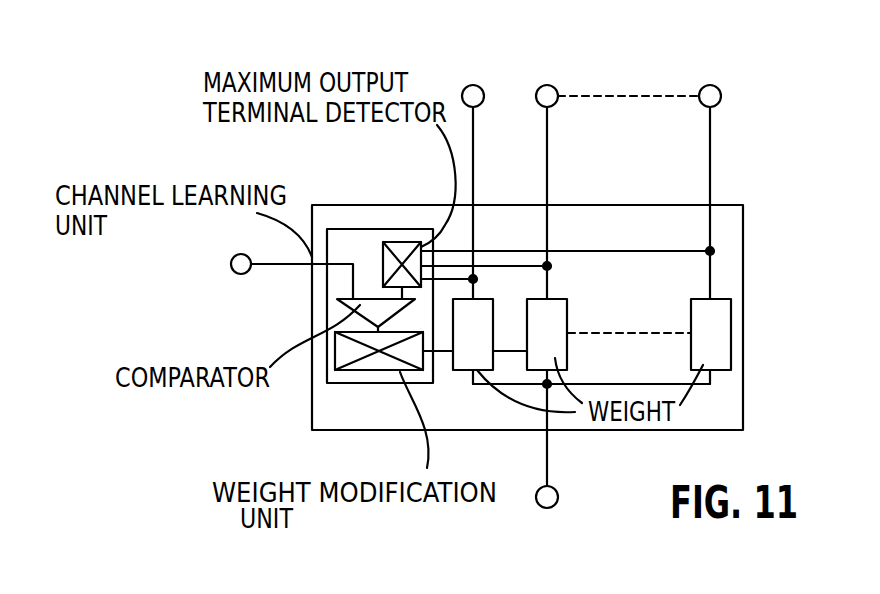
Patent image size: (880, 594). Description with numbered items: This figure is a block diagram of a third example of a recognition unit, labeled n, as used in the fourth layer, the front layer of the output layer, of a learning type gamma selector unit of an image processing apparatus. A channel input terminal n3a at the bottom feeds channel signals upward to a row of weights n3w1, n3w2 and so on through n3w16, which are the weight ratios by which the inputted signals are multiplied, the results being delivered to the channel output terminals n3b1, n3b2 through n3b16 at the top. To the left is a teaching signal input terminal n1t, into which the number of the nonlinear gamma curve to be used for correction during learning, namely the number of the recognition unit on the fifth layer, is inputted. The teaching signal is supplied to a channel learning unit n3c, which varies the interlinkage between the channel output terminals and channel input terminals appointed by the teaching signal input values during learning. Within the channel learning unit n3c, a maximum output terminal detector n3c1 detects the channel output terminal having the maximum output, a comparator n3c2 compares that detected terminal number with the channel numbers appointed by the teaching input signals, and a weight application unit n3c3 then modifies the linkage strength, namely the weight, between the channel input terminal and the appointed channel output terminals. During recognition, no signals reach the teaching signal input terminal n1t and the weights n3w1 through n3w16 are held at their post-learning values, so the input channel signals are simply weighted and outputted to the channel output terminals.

The neuron n is at (607, 205).
The channel learning unit n3c is at (327, 229).
The maximum output terminal detector n3c1 is at (413, 242).
The comparator n3c2 is at (375, 297).
The weight application unit n3c3 is at (373, 372).
The teaching signal input terminal n1t is at (235, 274).
The channel output terminal n3b1 is at (473, 85).
The channel output terminal n3b2 is at (541, 85).
The channel output terminal n3b16 is at (711, 85).
The channel input terminal n3a is at (539, 506).
The weight n3w1 is at (495, 312).
The weight n3w2 is at (568, 323).
The weight n3w16 is at (730, 299).